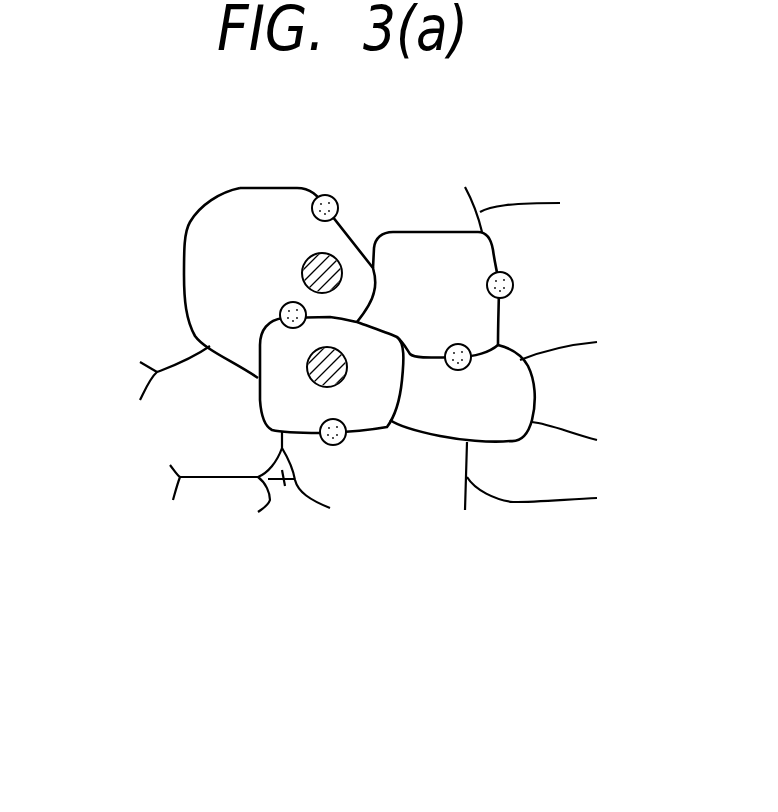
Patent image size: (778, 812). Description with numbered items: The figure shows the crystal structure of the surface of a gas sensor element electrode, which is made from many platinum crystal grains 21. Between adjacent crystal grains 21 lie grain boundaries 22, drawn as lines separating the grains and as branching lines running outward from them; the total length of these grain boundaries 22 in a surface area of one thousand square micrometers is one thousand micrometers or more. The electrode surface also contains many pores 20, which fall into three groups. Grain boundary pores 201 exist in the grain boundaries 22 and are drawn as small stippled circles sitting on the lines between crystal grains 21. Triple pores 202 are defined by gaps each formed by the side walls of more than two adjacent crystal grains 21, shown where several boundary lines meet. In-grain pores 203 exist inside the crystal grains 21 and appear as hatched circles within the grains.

The pores 20 is at (344, 367).
The crystal grains 21 is at (215, 213).
The grain boundaries 22 is at (256, 185).
The grain boundary pores 201 is at (322, 197).
The triple pores 202 is at (283, 472).
The in-grain pores 203 is at (302, 273).